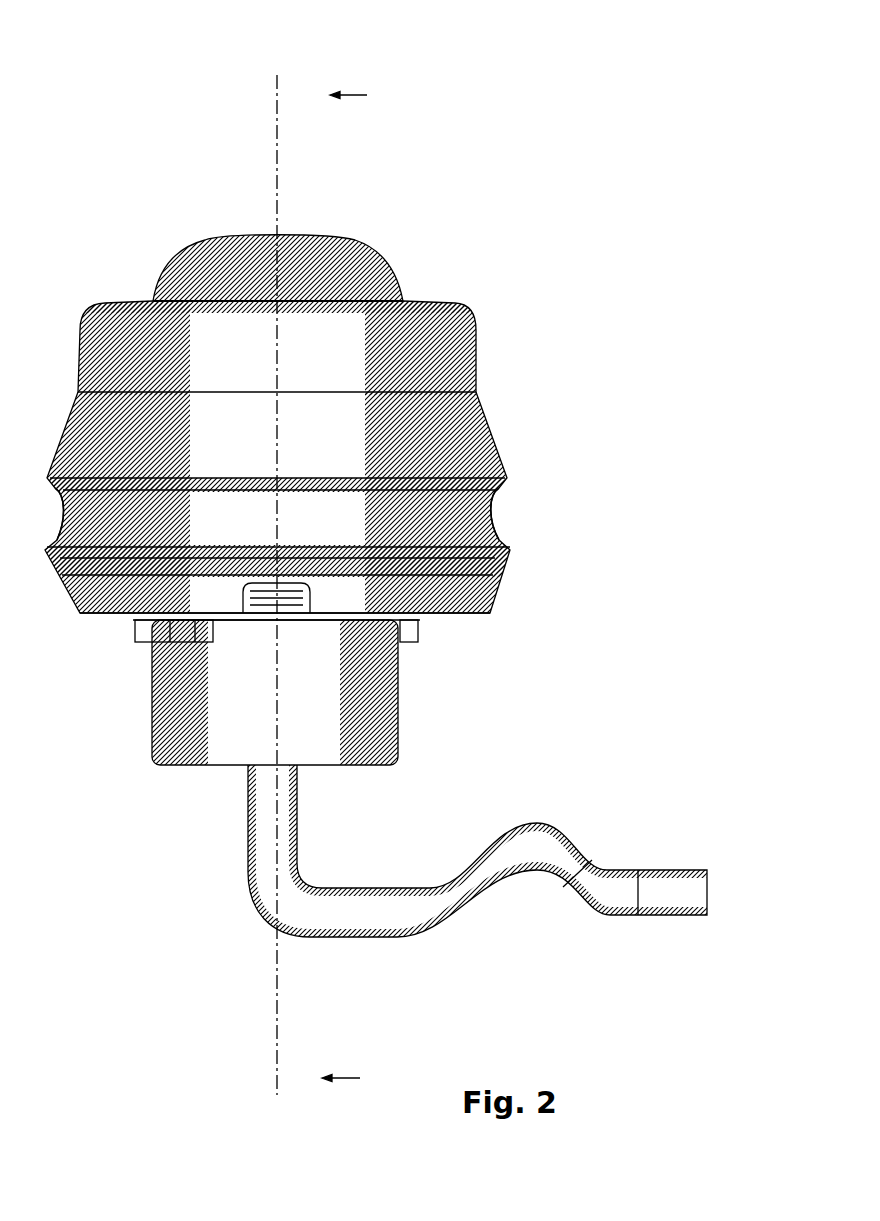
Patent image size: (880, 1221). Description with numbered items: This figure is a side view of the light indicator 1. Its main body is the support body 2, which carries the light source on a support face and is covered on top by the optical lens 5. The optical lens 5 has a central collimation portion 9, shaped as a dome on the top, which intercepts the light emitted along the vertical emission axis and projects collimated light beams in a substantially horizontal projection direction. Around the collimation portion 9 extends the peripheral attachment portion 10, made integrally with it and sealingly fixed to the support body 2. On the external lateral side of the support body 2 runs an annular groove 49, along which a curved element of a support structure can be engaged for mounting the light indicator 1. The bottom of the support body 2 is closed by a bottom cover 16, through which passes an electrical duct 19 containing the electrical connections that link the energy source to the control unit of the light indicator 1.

The light indicator 1 is at (395, 551).
The support body 2 is at (341, 525).
The optical lens 5 is at (319, 262).
The collimation portion 9 is at (242, 267).
The attachment portion 10 is at (478, 342).
The bottom cover 16 is at (488, 602).
The electrical duct 19 is at (427, 925).
The annular groove 49 is at (512, 523).